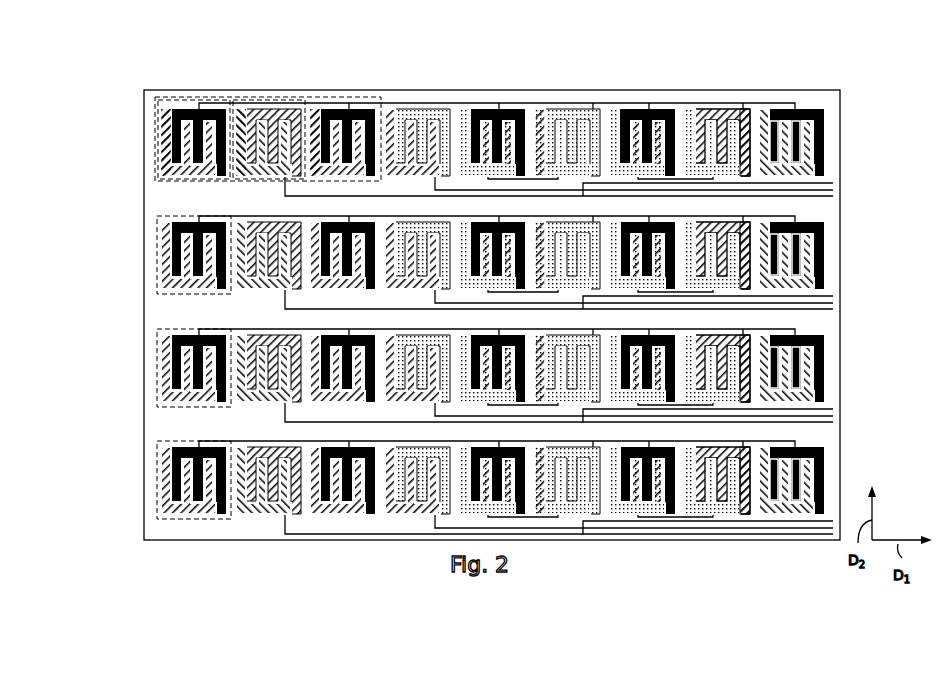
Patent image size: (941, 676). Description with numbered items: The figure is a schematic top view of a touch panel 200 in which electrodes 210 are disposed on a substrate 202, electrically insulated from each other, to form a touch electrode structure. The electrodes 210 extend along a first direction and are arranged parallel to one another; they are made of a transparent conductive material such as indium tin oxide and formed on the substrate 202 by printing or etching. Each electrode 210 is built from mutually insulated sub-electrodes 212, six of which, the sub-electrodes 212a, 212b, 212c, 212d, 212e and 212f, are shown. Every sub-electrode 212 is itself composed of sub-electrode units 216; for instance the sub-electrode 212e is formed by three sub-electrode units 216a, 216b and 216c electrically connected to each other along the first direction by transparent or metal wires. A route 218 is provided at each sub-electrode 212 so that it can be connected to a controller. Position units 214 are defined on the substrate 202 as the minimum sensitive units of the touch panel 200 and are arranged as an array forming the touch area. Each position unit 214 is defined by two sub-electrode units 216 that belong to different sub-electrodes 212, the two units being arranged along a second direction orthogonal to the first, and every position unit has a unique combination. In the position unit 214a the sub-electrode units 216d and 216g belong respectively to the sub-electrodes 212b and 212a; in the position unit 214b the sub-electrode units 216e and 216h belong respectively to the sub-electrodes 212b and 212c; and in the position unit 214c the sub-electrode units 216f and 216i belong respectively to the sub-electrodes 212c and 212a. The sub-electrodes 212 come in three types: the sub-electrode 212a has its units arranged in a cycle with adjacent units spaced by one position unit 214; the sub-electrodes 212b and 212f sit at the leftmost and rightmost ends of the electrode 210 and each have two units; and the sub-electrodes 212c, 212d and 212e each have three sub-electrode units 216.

The touch panel 200 is at (129, 48).
The substrate 202 is at (840, 90).
The electrodes 210 is at (830, 137).
The sub-electrodes 212 is at (151, 367).
The sub-electrode 212a is at (207, 121).
The sub-electrode 212b is at (169, 112).
The sub-electrode 212c is at (255, 131).
The sub-electrode 212d is at (540, 108).
The sub-electrode 212e is at (669, 93).
The sub-electrode 212f is at (742, 108).
The position units 214 is at (160, 255).
The position unit 214a is at (183, 109).
The position unit 214b is at (262, 109).
The position unit 214c is at (335, 109).
The sub-electrode units 216 is at (175, 402).
The sub-electrode unit 216a is at (595, 108).
The sub-electrode unit 216b is at (615, 108).
The sub-electrode unit 216c is at (717, 109).
The sub-electrode unit 216d is at (161, 165).
The sub-electrode unit 216e is at (238, 176).
The sub-electrode unit 216f is at (312, 176).
The sub-electrode unit 216g is at (226, 109).
The sub-electrode unit 216h is at (300, 109).
The sub-electrode unit 216i is at (372, 109).
The route 218 is at (833, 183).